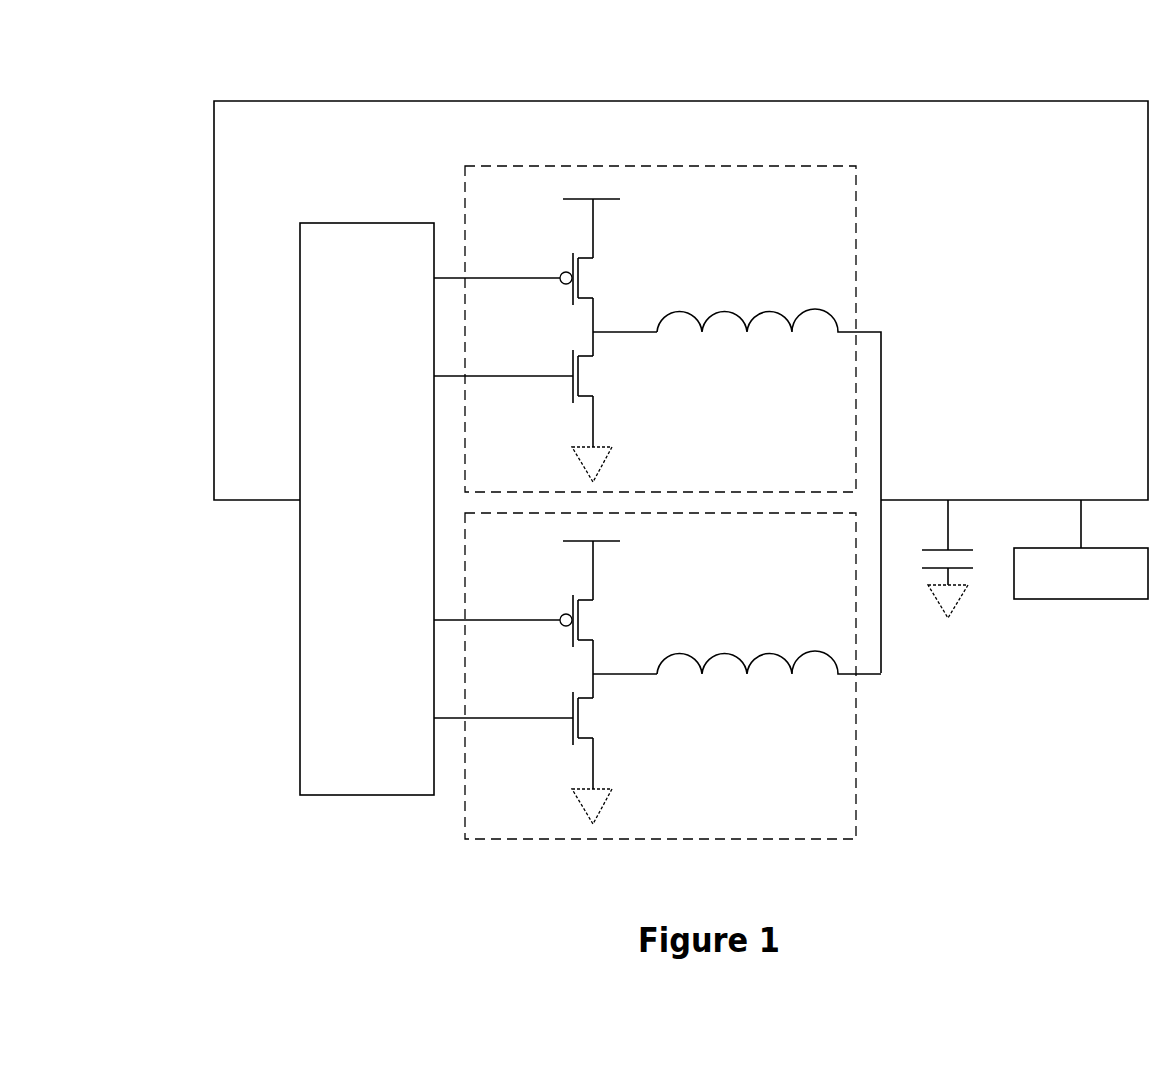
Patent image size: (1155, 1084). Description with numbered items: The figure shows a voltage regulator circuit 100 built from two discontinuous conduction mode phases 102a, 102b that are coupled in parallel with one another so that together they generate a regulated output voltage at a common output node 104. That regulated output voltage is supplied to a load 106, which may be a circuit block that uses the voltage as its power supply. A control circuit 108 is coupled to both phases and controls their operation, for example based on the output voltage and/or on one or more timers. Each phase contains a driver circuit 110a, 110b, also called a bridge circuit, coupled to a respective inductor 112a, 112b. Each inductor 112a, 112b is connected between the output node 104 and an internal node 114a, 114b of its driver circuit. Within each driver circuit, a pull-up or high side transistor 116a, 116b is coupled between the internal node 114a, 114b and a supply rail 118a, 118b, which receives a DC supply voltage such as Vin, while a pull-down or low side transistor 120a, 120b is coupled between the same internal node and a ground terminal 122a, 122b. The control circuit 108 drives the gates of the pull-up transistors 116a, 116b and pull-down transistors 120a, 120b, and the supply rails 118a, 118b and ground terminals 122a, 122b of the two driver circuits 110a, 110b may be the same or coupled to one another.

The voltage regulator circuit 100 is at (142, 98).
The discontinuous conduction mode phase 102a is at (857, 232).
The discontinuous conduction mode phase 102b is at (858, 745).
The output node 104 is at (930, 499).
The load 106 is at (1081, 549).
The control circuit 108 is at (367, 509).
The driver circuit 110a is at (551, 228).
The driver circuit 110b is at (536, 659).
The inductor 112a is at (720, 309).
The inductor 112b is at (769, 635).
The internal node 114a is at (597, 335).
The internal node 114b is at (639, 701).
The pull-up transistor 116a is at (575, 296).
The pull-up transistor 116b is at (504, 639).
The supply rail 118a is at (598, 200).
The supply rail 118b is at (627, 560).
The pull-down transistor 120a is at (575, 398).
The pull-down transistor 120b is at (504, 736).
The ground terminal 122a is at (603, 462).
The ground terminal 122b is at (641, 794).